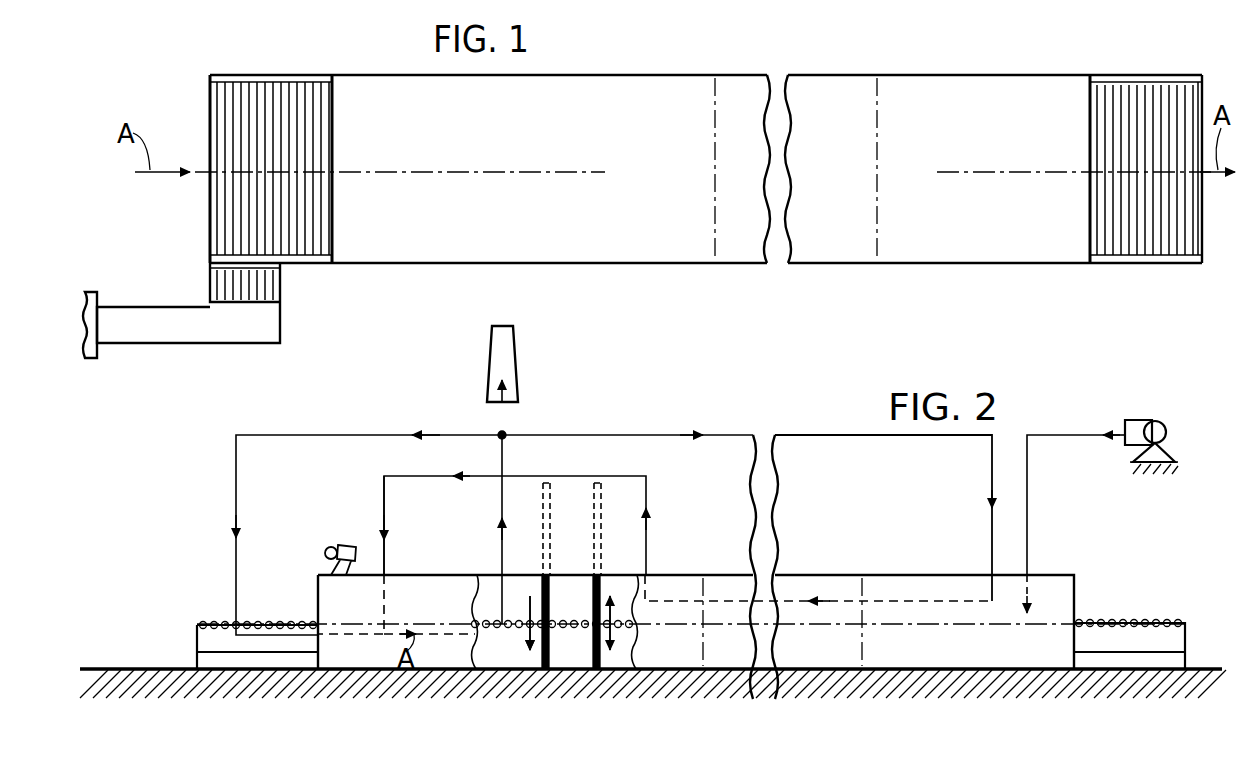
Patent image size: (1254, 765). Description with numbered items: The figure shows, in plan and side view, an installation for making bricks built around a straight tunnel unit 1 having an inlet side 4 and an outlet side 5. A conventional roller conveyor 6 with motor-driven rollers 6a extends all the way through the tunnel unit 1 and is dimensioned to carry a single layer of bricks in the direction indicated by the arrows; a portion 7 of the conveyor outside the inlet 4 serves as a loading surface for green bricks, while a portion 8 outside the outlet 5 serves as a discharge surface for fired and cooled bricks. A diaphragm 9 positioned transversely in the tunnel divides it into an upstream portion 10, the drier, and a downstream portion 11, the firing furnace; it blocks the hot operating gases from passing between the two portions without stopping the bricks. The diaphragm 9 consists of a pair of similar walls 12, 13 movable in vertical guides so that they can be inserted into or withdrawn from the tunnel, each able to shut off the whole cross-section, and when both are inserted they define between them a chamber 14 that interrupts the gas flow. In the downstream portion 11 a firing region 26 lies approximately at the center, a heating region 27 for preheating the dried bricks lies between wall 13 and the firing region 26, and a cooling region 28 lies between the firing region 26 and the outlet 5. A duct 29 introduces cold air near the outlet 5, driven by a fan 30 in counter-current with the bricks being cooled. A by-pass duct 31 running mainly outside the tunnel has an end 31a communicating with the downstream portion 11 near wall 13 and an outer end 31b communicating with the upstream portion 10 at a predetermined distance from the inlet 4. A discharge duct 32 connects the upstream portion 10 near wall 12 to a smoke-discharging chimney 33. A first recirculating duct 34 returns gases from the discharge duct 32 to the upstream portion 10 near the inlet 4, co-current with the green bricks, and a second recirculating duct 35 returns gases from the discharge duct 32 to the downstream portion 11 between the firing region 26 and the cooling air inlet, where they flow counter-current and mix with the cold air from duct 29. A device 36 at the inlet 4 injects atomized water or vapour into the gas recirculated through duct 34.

In FIG. 1, the tunnel unit 1 is at (622, 62).
In FIG. 2, the tunnel unit 1 is at (803, 486).
In FIG. 1, the inlet side 4 is at (332, 112).
In FIG. 2, the inlet side 4 is at (318, 595).
In FIG. 1, the outlet side 5 is at (1093, 101).
In FIG. 2, the outlet side 5 is at (1077, 592).
In FIG. 1, the roller conveyor 6 is at (245, 113).
In FIG. 2, the roller conveyor 6 is at (228, 618).
In FIG. 2, the motor-driven rollers 6a is at (296, 620).
In FIG. 1, the conveyor portion 7 is at (225, 213).
In FIG. 2, the conveyor portion 7 is at (268, 620).
In FIG. 1, the conveyor portion 8 is at (1155, 115).
In FIG. 2, the conveyor portion 8 is at (1145, 620).
In FIG. 2, the diaphragm 9 is at (570, 579).
In FIG. 2, the upstream portion 10 is at (414, 578).
In FIG. 2, the downstream portion 11 is at (940, 590).
In FIG. 2, the wall 12 is at (548, 509).
In FIG. 2, the wall 13 is at (598, 509).
In FIG. 2, the chamber 14 is at (568, 645).
In FIG. 1, the firing region 26 is at (838, 85).
In FIG. 2, the firing region 26 is at (837, 592).
In FIG. 2, the heating region 27 is at (685, 577).
In FIG. 1, the cooling region 28 is at (979, 97).
In FIG. 2, the cooling region 28 is at (948, 653).
In FIG. 2, the duct 29 is at (1027, 520).
In FIG. 2, the fan 30 is at (1155, 420).
In FIG. 2, the by-pass duct 31 is at (472, 481).
In FIG. 2, the duct end 31a is at (654, 557).
In FIG. 2, the duct outer end 31b is at (375, 570).
In FIG. 2, the discharge duct 32 is at (500, 559).
In FIG. 2, the smoke-discharging chimney 33 is at (512, 355).
In FIG. 2, the first recirculating duct 34 is at (372, 435).
In FIG. 2, the second recirculating duct 35 is at (700, 435).
In FIG. 2, the injection device 36 is at (331, 545).